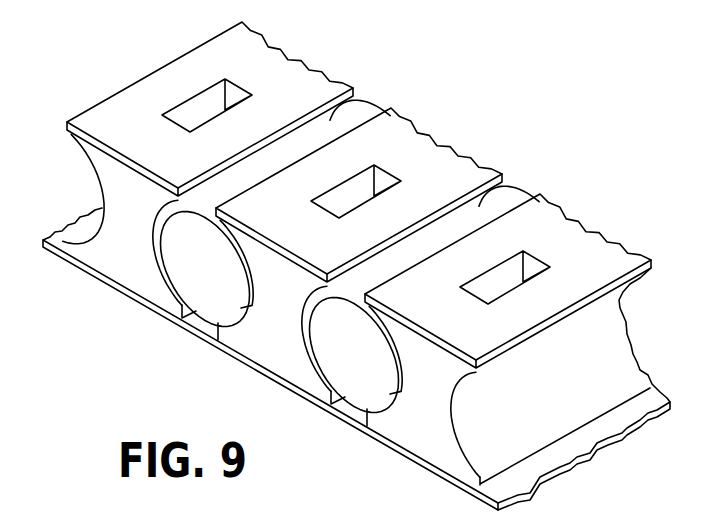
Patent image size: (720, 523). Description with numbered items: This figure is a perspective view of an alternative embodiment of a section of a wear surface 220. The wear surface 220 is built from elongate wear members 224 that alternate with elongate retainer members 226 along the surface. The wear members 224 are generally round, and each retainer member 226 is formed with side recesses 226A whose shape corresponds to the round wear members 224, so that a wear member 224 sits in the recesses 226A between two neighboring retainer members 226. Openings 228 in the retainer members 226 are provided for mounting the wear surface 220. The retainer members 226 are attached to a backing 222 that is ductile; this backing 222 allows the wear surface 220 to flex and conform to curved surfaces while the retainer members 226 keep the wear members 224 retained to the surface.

The wear surface 220 is at (440, 110).
The backing 222 is at (583, 462).
The elongate wear member 224 is at (208, 297).
The elongate retainer member 226 is at (355, 254).
The side recess 226A is at (167, 285).
The opening 228 is at (236, 98).